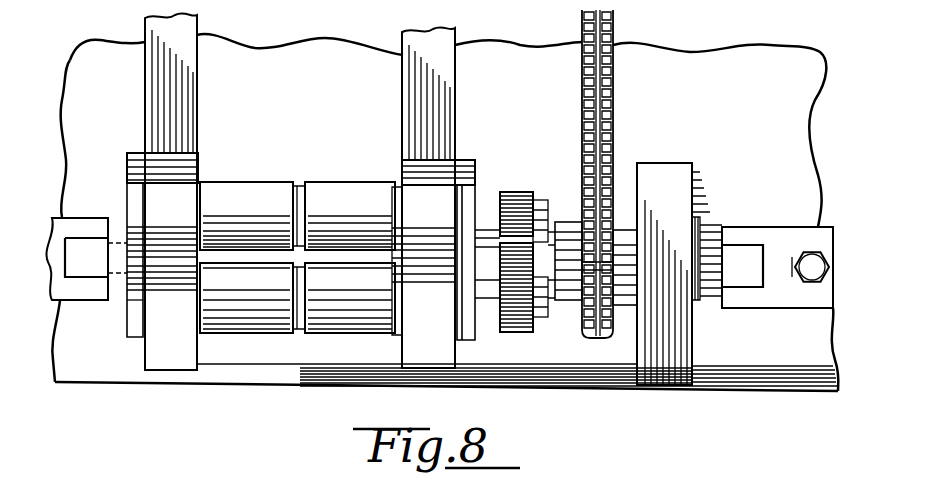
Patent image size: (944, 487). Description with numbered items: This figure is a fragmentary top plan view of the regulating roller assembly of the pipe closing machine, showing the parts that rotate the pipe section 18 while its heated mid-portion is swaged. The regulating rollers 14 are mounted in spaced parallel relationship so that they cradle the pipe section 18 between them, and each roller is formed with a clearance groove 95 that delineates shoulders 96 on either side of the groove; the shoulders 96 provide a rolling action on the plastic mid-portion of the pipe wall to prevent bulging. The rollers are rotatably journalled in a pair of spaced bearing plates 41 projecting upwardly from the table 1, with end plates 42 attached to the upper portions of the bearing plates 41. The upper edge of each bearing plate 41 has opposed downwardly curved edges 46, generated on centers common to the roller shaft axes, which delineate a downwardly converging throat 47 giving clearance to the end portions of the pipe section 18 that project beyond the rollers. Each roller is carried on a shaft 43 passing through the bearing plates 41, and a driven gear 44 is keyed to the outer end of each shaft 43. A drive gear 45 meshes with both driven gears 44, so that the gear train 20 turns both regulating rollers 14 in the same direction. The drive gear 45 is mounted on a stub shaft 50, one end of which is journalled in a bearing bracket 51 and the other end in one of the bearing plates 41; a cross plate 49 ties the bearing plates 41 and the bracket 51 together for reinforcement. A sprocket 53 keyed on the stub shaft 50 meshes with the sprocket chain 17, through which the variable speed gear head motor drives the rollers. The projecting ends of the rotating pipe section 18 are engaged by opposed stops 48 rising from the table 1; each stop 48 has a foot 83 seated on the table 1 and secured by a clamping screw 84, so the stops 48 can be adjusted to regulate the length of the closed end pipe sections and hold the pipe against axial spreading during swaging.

The table 1 is at (103, 360).
The regulating rollers 14 is at (297, 187).
The sprocket chain 17 is at (618, 88).
The pipe section 18 is at (236, 272).
The gear train 20 is at (508, 190).
The bearing plates 41 is at (150, 64).
The end plates 42 is at (135, 318).
The shafts 43 is at (548, 212).
The driven gear 44 is at (522, 196).
The drive gear 45 is at (547, 316).
The curved edges 46 is at (168, 285).
The throat 47 is at (170, 250).
The stops 48 is at (82, 226).
The cross plate 49 is at (262, 370).
The stub shaft 50 is at (625, 245).
The bearing bracket 51 is at (668, 178).
The sprocket 53 is at (595, 325).
The foot 83 is at (793, 248).
The clamping screw 84 is at (818, 278).
The clearance groove 95 is at (300, 188).
The shoulders 96 is at (292, 206).